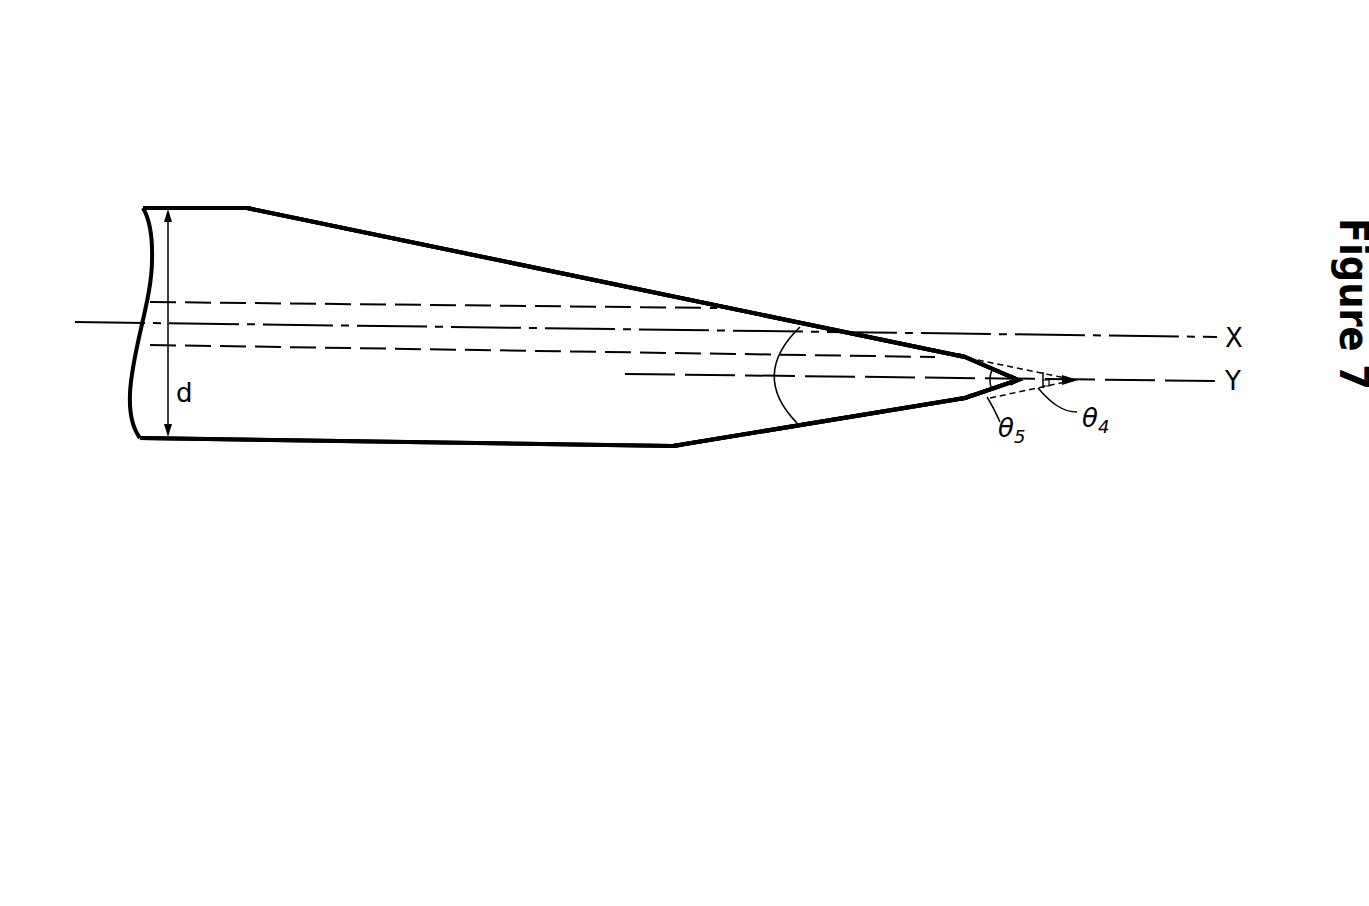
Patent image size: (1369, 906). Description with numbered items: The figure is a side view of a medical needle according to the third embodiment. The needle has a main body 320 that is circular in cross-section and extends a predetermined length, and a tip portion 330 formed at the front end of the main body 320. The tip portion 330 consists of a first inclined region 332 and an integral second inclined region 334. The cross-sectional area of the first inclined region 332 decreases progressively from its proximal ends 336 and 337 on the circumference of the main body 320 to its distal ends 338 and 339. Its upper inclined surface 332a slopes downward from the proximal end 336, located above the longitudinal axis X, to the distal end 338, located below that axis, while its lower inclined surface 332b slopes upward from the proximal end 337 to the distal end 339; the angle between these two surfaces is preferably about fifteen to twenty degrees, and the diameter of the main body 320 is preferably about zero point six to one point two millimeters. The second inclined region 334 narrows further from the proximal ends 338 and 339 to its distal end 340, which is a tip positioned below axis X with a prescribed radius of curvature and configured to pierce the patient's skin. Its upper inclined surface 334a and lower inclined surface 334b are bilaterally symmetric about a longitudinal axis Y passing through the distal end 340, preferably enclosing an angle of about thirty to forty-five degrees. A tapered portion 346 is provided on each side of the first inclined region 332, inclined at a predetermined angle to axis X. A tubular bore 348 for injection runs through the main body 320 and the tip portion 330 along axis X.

The main body 320 is at (200, 230).
The tip portion 330 is at (731, 109).
The first inclined region 332 is at (530, 175).
The upper inclined surface 332a is at (363, 228).
The lower inclined surface 332b is at (743, 438).
The second inclined region 334 is at (1012, 341).
The upper inclined surface 334a is at (982, 357).
The lower inclined surface 334b is at (1008, 398).
The proximal end 336 is at (250, 207).
The proximal end 337 is at (670, 448).
The distal end 338 is at (962, 355).
The distal end 339 is at (963, 407).
The distal end 340 is at (1023, 368).
The tapered portion 346 is at (817, 395).
The tubular bore 348 is at (597, 307).